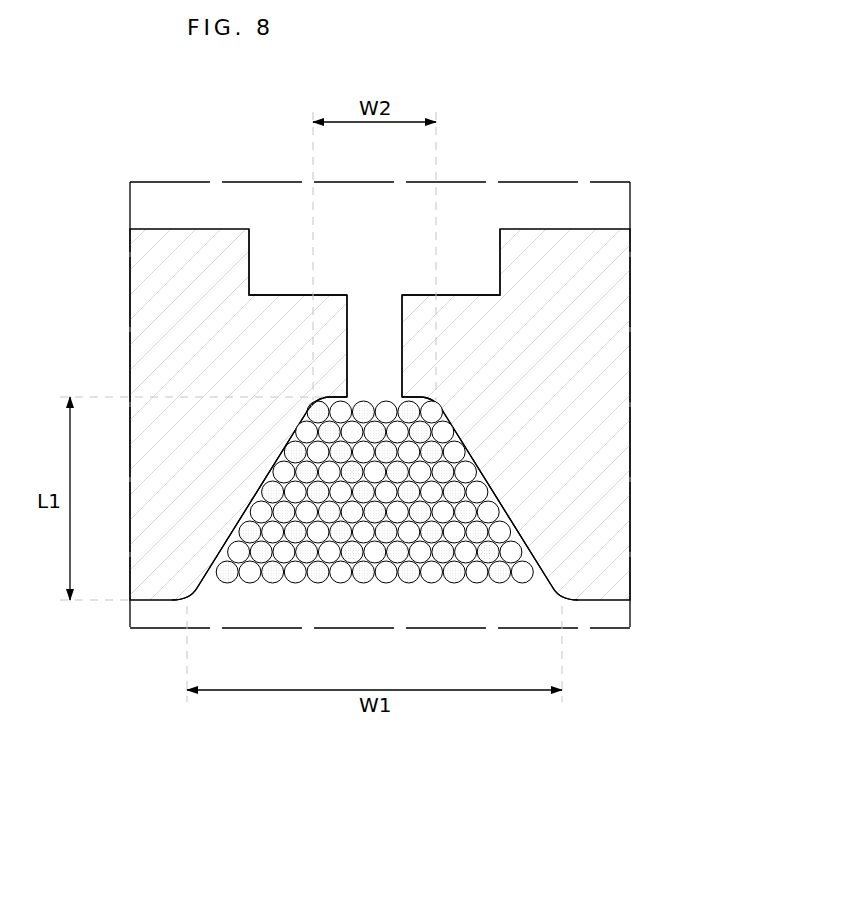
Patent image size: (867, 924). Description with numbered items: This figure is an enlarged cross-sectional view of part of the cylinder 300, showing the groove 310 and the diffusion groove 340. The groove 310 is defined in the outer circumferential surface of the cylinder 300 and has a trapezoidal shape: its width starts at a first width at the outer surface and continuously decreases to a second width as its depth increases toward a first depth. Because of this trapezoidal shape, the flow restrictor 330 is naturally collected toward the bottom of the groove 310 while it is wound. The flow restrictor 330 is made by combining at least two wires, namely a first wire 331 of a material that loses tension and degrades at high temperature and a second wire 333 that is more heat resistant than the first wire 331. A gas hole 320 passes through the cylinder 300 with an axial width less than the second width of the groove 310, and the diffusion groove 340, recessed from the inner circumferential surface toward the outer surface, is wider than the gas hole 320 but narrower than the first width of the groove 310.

The cylinder 300 is at (626, 300).
The groove 310 is at (489, 593).
The gas hole 320 is at (377, 340).
The flow restrictor 330 is at (374, 596).
The first wire 331 is at (275, 583).
The second wire 333 is at (296, 583).
The diffusion groove 340 is at (471, 252).